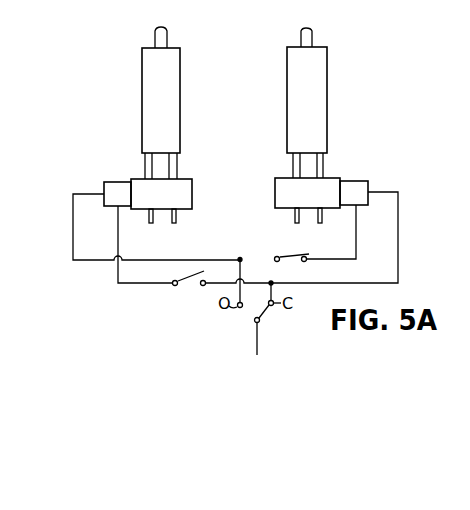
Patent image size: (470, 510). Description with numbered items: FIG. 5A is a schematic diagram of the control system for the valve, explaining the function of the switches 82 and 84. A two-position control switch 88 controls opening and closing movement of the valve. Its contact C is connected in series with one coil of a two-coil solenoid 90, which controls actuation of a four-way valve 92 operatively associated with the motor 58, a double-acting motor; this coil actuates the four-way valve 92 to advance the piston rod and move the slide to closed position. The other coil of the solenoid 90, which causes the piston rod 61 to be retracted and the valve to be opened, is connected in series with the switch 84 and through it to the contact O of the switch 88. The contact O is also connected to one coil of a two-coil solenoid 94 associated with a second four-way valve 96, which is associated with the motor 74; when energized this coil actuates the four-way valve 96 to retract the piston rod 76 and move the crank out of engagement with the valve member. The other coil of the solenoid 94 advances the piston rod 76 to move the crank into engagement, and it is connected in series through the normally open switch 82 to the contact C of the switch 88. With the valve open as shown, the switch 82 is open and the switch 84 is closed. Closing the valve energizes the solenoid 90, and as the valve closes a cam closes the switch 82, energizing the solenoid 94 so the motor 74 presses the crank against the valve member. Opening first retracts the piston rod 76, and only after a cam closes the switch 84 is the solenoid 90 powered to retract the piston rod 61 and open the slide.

The motor 58 is at (318, 90).
The piston rod 61 is at (307, 34).
The motor 74 is at (152, 90).
The piston rod 76 is at (163, 34).
The normally open switch 82 is at (177, 288).
The switch 84 is at (283, 256).
The two-position control switch 88 is at (252, 309).
The two-coil solenoid 90 is at (352, 188).
The four-way valve 92 is at (287, 184).
The two-coil solenoid 94 is at (120, 185).
The four-way valve 96 is at (183, 188).